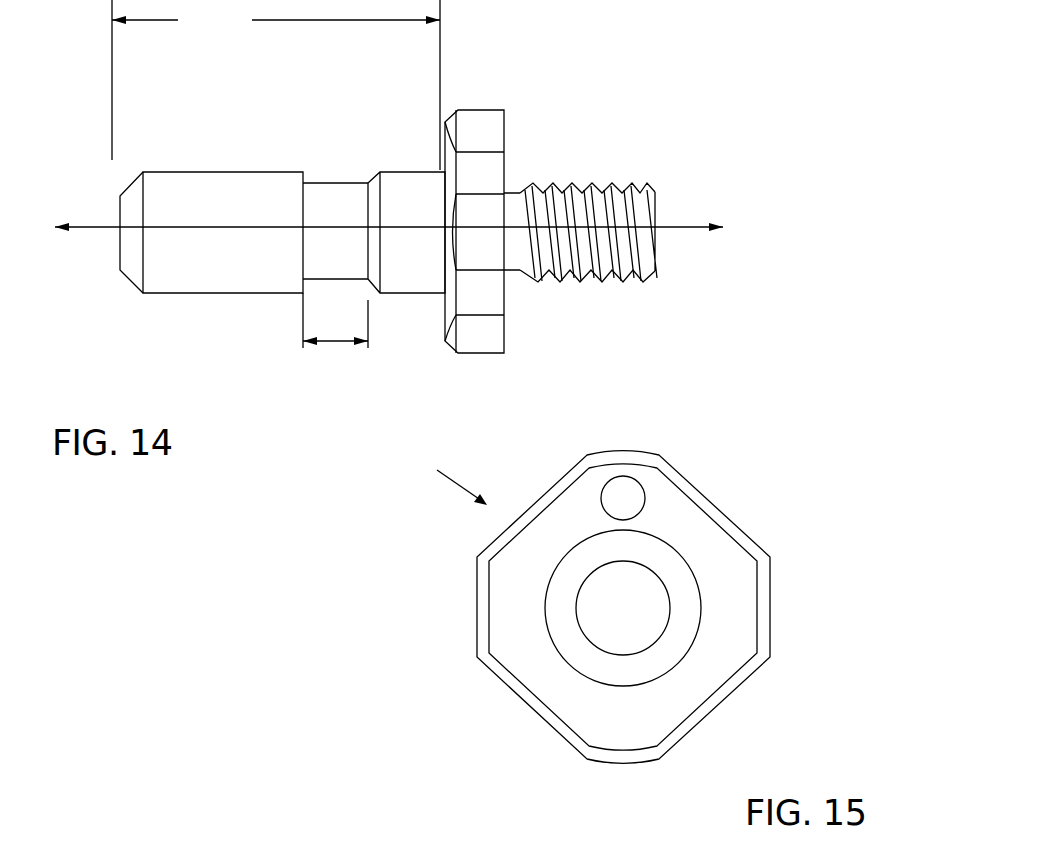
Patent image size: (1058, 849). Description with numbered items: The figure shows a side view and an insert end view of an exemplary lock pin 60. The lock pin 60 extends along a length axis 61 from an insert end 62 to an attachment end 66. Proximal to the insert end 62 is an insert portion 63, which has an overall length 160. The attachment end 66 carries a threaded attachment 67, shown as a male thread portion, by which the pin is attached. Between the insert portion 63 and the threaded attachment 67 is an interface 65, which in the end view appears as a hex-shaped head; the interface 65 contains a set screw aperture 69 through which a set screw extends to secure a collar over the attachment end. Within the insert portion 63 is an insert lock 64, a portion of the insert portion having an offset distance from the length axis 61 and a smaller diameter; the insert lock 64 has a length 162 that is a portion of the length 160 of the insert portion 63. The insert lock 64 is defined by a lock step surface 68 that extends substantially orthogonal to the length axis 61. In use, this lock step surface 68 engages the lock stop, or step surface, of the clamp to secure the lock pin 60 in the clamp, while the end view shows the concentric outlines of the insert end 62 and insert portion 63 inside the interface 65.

In FIG. 15, the lock pin 60 is at (451, 475).
In FIG. 14, the length axis 61 is at (703, 225).
In FIG. 14, the insert end 62 is at (118, 218).
In FIG. 15, the insert end 62 is at (583, 602).
In FIG. 14, the insert portion 63 is at (263, 222).
In FIG. 15, the insert portion 63 is at (597, 667).
In FIG. 14, the insert lock 64 is at (345, 198).
In FIG. 14, the interface 65 is at (485, 327).
In FIG. 15, the interface 65 is at (705, 507).
In FIG. 14, the attachment end 66 is at (660, 210).
In FIG. 14, the threaded attachment 67 is at (583, 212).
In FIG. 14, the lock step surface 68 is at (307, 183).
In FIG. 15, the set screw aperture 69 is at (627, 497).
In FIG. 14, the length of the insert portion 160 is at (276, 85).
In FIG. 14, the length of the insert lock 162 is at (335, 340).